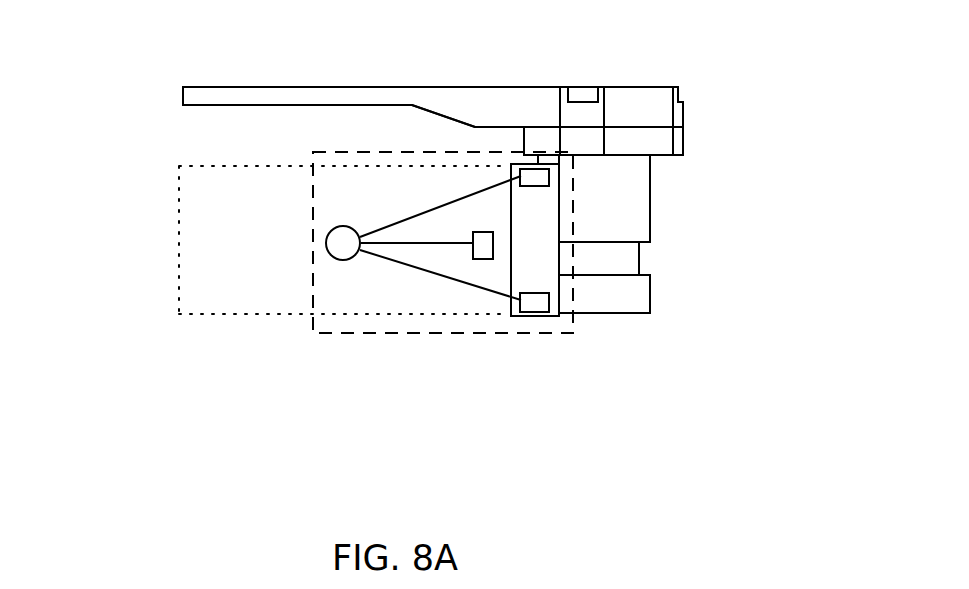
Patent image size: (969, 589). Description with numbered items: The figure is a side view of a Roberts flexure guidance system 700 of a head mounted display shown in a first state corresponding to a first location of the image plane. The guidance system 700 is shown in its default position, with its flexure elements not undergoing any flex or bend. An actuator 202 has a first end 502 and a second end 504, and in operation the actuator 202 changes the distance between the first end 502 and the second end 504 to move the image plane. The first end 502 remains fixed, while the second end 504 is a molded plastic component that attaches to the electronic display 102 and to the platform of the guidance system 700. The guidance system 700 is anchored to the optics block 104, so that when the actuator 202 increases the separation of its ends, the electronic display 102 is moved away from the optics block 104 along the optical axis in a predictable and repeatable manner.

The electronic display 102 is at (202, 96).
The optics block 104 is at (182, 281).
The actuator 202 is at (734, 243).
The first end 502 is at (650, 303).
The second end 504 is at (650, 200).
The Roberts flexure guidance system 700 is at (538, 333).